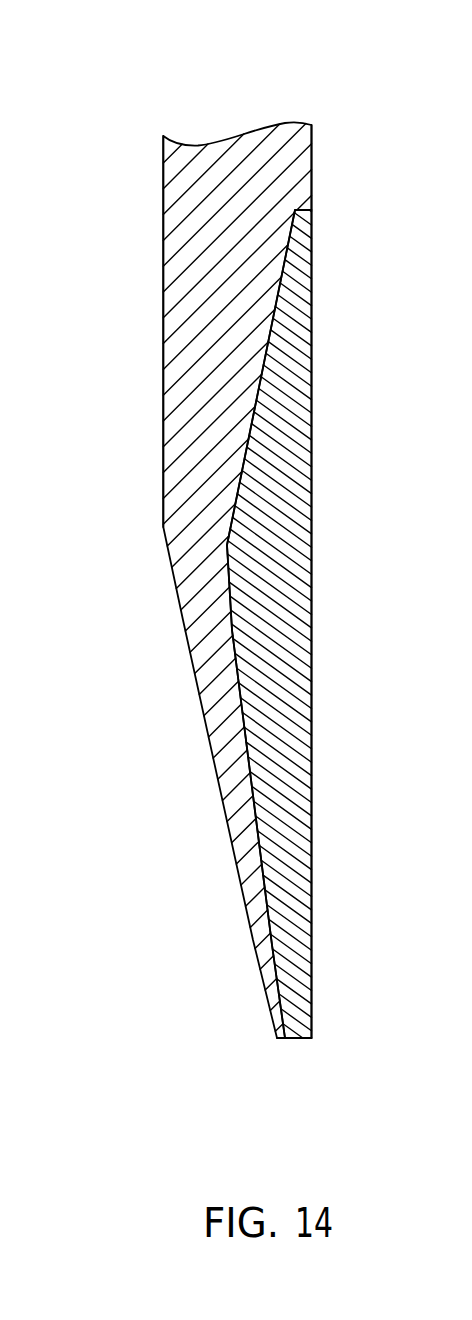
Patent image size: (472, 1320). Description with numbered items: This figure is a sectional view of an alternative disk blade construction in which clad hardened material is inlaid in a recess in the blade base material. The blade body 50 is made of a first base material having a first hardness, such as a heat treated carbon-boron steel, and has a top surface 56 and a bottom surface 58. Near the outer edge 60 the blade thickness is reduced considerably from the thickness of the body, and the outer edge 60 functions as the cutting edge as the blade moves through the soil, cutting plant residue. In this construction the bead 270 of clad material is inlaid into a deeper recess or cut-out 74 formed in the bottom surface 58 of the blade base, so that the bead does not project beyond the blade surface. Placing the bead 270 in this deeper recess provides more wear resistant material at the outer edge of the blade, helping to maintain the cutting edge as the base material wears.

The blade body 50 is at (157, 53).
The top surface 56 is at (163, 262).
The bottom surface 58 is at (312, 190).
The outer edge 60 is at (297, 1038).
The recess or cut-out 74 is at (263, 371).
The bead 270 is at (312, 608).